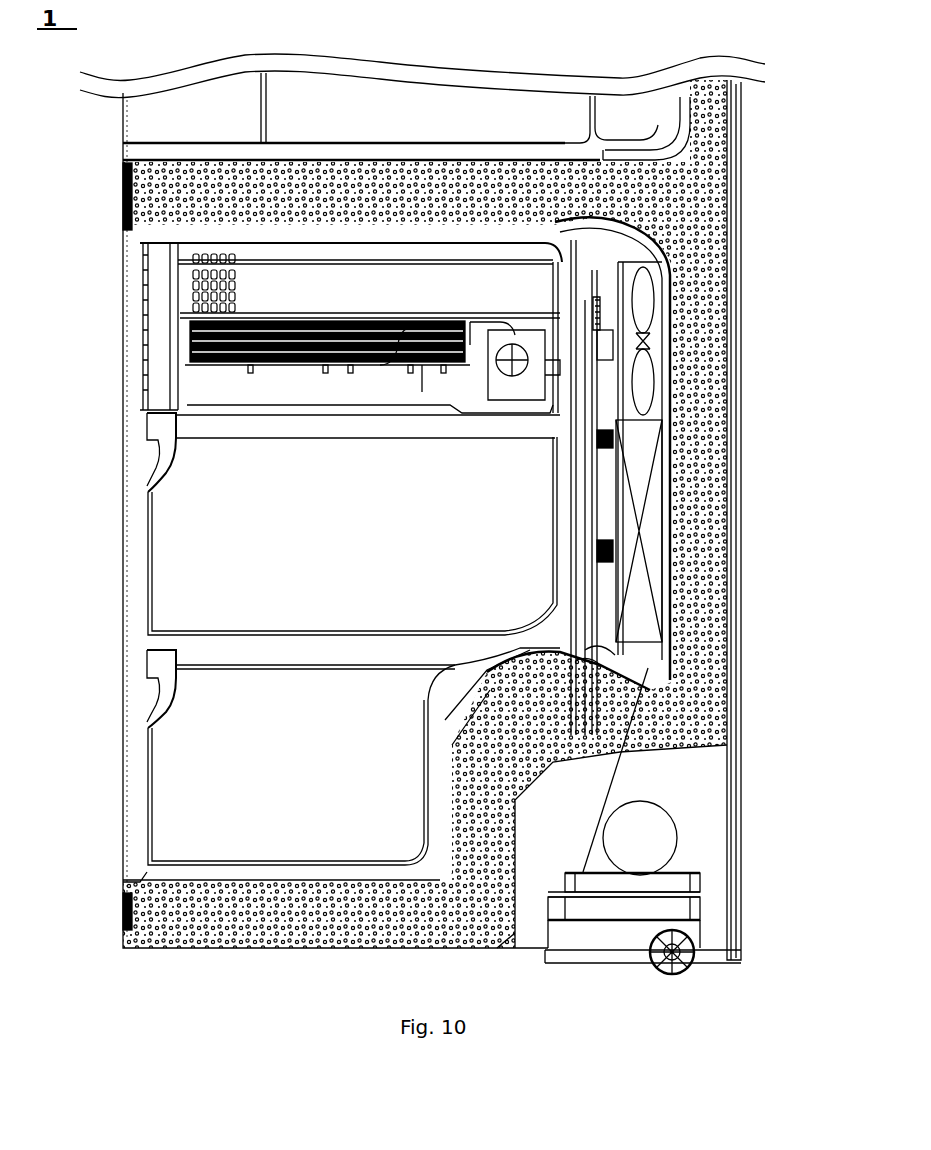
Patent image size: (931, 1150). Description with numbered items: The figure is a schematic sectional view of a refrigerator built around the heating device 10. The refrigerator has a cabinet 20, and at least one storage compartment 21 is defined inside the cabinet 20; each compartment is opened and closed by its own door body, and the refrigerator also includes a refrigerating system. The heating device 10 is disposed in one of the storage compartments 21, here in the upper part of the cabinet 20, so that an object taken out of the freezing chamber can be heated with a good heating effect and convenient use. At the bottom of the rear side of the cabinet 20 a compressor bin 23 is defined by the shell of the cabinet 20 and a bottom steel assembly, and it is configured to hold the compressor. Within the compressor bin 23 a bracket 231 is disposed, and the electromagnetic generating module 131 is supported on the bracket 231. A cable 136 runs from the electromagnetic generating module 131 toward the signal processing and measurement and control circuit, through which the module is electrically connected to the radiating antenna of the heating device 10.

The cabinet 20 is at (752, 170).
The cable 136 is at (672, 256).
The heating device 10 is at (130, 304).
The storage compartment 21 is at (135, 462).
The compressor bin 23 is at (713, 803).
The electromagnetic generating module 131 is at (682, 877).
The bracket 231 is at (678, 905).